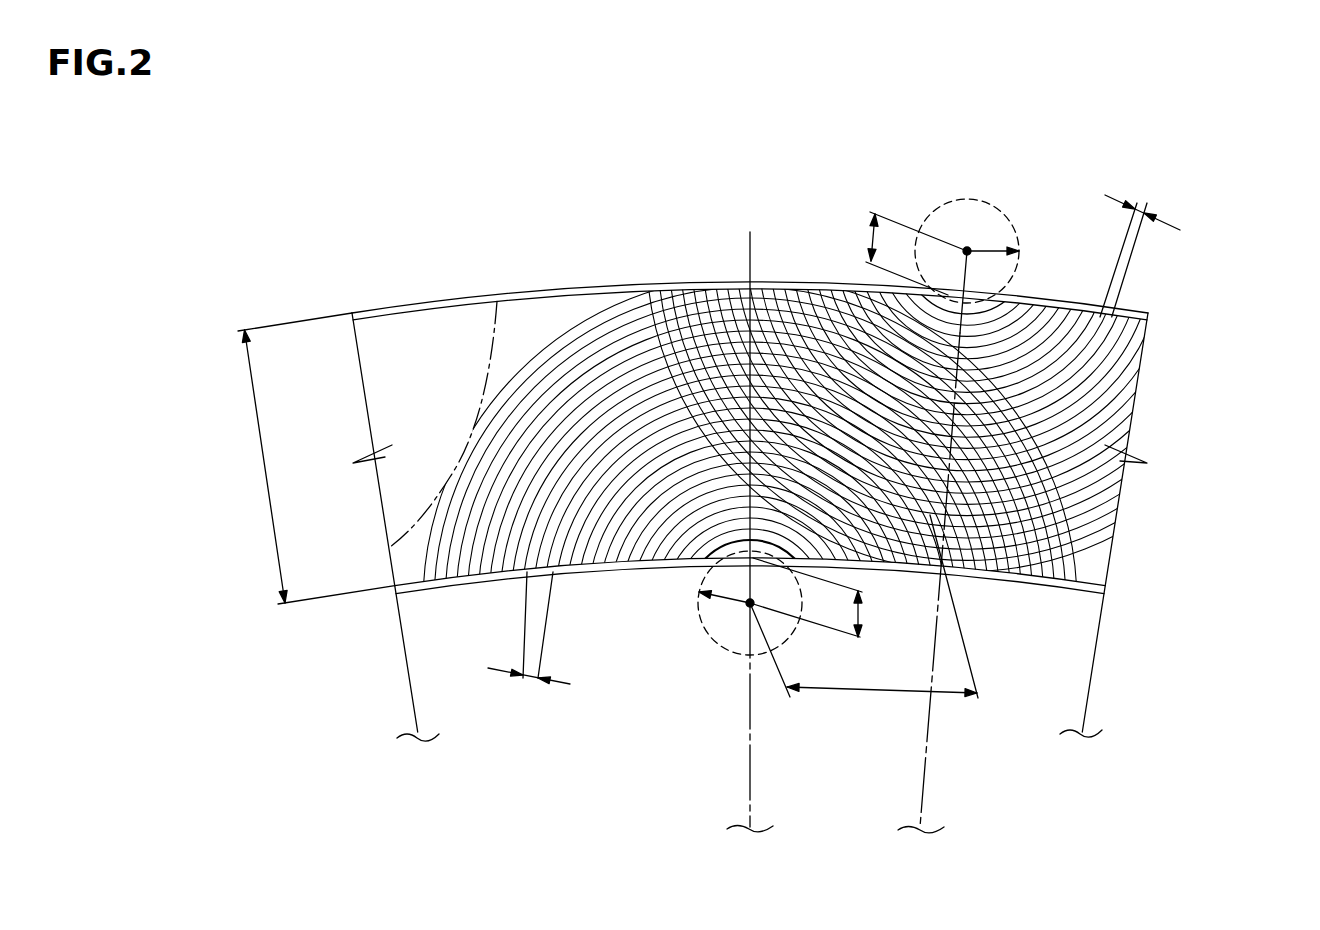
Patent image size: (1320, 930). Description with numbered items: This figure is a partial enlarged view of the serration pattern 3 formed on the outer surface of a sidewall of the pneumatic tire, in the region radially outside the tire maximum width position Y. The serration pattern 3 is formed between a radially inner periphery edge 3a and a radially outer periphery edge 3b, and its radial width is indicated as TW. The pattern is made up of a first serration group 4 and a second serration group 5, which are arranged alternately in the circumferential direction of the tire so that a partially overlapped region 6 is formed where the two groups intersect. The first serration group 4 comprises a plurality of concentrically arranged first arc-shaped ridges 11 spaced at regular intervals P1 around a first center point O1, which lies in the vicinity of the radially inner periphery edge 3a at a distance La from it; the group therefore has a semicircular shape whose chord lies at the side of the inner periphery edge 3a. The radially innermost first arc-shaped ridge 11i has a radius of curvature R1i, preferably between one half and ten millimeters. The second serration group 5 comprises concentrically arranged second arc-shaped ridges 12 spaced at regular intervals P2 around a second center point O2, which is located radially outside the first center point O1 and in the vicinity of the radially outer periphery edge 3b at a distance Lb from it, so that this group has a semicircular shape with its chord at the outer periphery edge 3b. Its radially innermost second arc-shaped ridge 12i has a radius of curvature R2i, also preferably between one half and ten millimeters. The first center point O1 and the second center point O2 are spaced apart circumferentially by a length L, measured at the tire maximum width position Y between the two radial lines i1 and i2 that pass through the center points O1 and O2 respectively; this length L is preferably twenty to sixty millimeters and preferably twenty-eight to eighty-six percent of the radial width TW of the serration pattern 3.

The serration pattern 3 is at (1150, 493).
The radially inner periphery edge 3a is at (1100, 582).
The radially outer periphery edge 3b is at (1133, 308).
The first serration group 4 is at (608, 552).
The second serration group 5 is at (1120, 420).
The partially overlapped region 6 is at (815, 342).
The first arc-shaped ridges 11 is at (437, 537).
The radially innermost first arc-shaped ridge 11i is at (700, 556).
The second arc-shaped ridges 12 is at (1118, 350).
The radially innermost second arc-shaped ridge 12i is at (1035, 310).
The first center point O1 is at (750, 608).
The second center point O2 is at (968, 247).
The radius of curvature of the innermost first arc-shaped ridge R1i is at (733, 600).
The radius of curvature of the innermost second arc-shaped ridge R2i is at (992, 251).
The radial line through the first center point i1 is at (748, 786).
The radial line through the second center point i2 is at (920, 795).
The length between center points L is at (864, 620).
The distance between first center point and inner periphery edge La is at (823, 597).
The distance between second center point and outer periphery edge Lb is at (898, 253).
The interval of first arc-shaped ridges P1 is at (529, 642).
The interval of second arc-shaped ridges P2 is at (1140, 249).
The radial width of the serration pattern TW is at (303, 458).
The tire maximum width position Y is at (1093, 588).